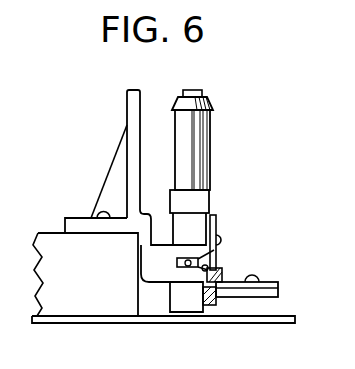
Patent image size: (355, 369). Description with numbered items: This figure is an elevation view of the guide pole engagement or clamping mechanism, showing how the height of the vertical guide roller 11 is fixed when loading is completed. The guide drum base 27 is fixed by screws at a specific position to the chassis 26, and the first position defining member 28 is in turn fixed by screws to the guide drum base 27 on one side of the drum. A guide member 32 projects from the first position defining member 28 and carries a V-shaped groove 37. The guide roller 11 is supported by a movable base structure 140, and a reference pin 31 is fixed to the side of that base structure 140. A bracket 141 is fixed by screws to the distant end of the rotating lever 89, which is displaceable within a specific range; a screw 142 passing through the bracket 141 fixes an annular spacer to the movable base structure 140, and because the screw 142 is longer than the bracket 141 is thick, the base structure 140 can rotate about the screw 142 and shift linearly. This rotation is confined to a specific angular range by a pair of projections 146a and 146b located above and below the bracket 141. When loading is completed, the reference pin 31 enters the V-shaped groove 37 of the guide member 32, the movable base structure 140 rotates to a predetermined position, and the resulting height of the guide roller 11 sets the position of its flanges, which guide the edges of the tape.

The guide roller 11 is at (205, 155).
The chassis 26 is at (92, 324).
The guide drum base 27 is at (43, 295).
The first position defining member 28 is at (111, 169).
The reference pin 31 is at (222, 263).
The guide member 32 is at (155, 283).
The V-shaped groove 37 is at (201, 263).
The rotating lever 89 is at (266, 295).
The movable base structure 140 is at (165, 217).
The bracket 141 is at (216, 228).
The screw 142 is at (221, 243).
The projection 146a is at (219, 272).
The projection 146b is at (211, 293).